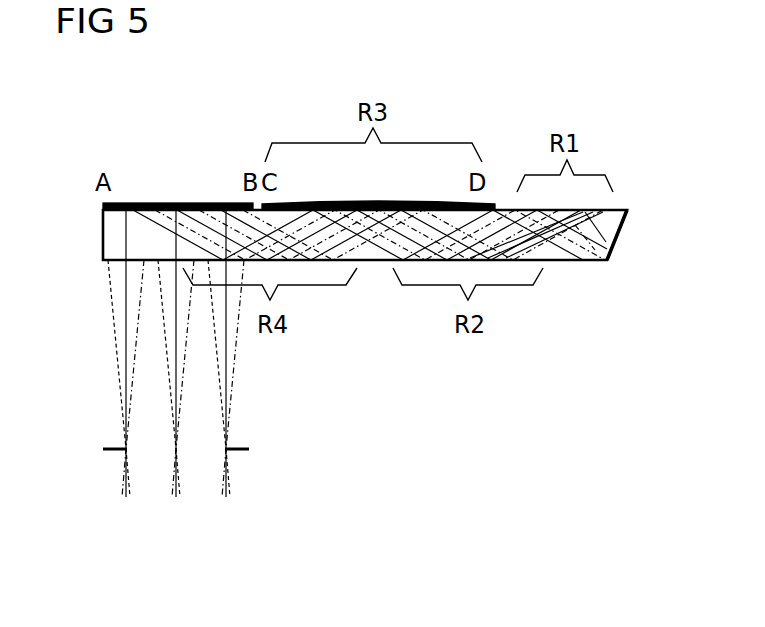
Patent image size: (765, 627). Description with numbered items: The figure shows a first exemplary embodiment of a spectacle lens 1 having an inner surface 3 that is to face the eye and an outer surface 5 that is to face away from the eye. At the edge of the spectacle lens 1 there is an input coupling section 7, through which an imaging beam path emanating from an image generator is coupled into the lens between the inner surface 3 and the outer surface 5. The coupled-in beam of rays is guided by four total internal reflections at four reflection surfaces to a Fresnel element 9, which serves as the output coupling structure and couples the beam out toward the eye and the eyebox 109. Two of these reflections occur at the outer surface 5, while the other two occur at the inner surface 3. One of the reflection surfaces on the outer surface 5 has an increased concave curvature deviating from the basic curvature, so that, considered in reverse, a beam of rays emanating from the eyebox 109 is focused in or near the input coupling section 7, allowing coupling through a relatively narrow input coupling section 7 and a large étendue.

The spectacle lens 1 is at (303, 96).
The inner surface 3 is at (570, 266).
The outer surface 5 is at (495, 208).
The input coupling section 7 is at (622, 240).
The Fresnel element 9 is at (167, 205).
The eyebox 109 is at (230, 447).